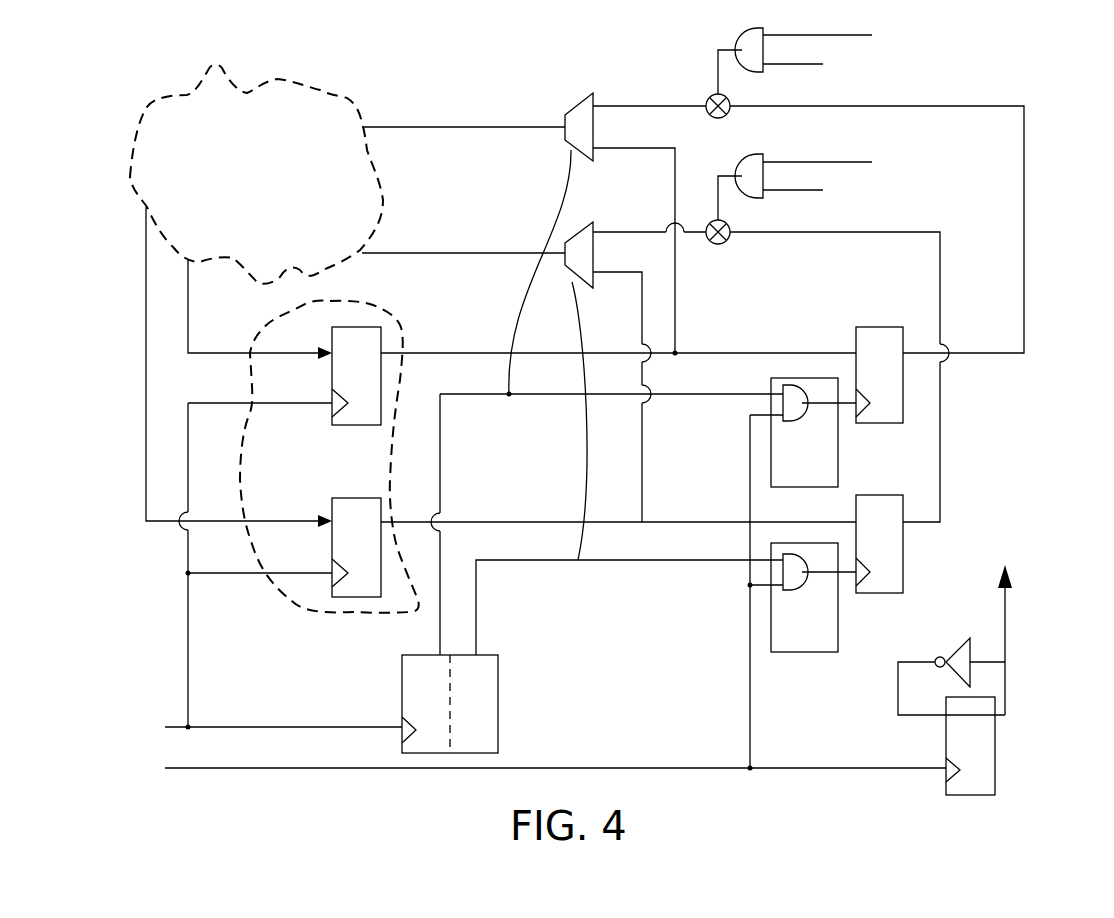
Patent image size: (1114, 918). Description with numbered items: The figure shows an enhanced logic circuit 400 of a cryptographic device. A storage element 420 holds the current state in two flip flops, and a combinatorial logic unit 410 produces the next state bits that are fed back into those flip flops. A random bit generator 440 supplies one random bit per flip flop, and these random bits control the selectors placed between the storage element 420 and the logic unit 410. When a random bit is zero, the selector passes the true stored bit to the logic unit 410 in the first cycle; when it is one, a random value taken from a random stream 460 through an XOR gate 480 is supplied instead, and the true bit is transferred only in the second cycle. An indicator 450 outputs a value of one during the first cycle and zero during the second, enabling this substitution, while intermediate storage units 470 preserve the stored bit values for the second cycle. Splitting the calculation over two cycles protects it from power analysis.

The enhanced logic circuit 400 is at (108, 88).
The combinatorial logic unit 410 is at (322, 93).
The storage element 420 is at (315, 612).
The random bit generator 440 is at (498, 712).
The indicator 450 is at (1005, 695).
The random stream 460 is at (937, 27).
The intermediate storage units 470 is at (905, 394).
The XOR gate 480 is at (711, 118).